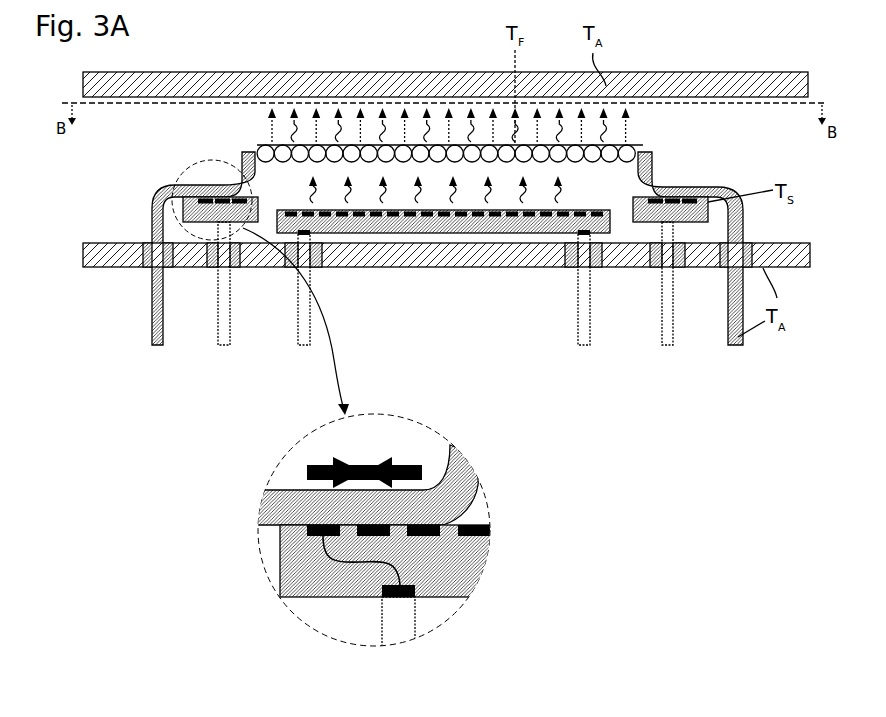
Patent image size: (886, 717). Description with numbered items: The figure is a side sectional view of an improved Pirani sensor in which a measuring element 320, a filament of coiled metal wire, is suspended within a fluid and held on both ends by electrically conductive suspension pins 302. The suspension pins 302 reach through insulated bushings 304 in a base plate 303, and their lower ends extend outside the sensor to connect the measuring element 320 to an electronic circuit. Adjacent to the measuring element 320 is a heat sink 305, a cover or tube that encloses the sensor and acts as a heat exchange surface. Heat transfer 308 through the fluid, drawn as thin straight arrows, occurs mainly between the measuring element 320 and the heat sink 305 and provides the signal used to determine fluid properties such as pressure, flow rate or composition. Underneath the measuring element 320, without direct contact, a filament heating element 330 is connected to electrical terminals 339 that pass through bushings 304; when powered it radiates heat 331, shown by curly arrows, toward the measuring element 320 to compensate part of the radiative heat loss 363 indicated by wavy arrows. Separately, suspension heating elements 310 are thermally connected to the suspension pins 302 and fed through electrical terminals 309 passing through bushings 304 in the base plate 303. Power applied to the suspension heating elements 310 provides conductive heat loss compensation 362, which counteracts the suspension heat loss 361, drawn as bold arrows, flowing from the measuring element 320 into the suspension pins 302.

The suspension pins 302 is at (727, 188).
The base plate 303 is at (446, 311).
The insulated bushings 304 is at (202, 260).
The heat sink 305 is at (288, 85).
The fluid heat transfer 308 is at (361, 140).
The electrical terminals 309 is at (227, 337).
The suspension heating elements 310 is at (229, 200).
The measuring element 320 is at (641, 158).
The filament heating element 330 is at (458, 227).
The heat 331 is at (494, 186).
The electrical terminals 339 is at (304, 338).
The suspension heat loss 361 is at (405, 463).
The conductive heat loss compensation 362 is at (322, 466).
The radiative heat loss 363 is at (433, 144).